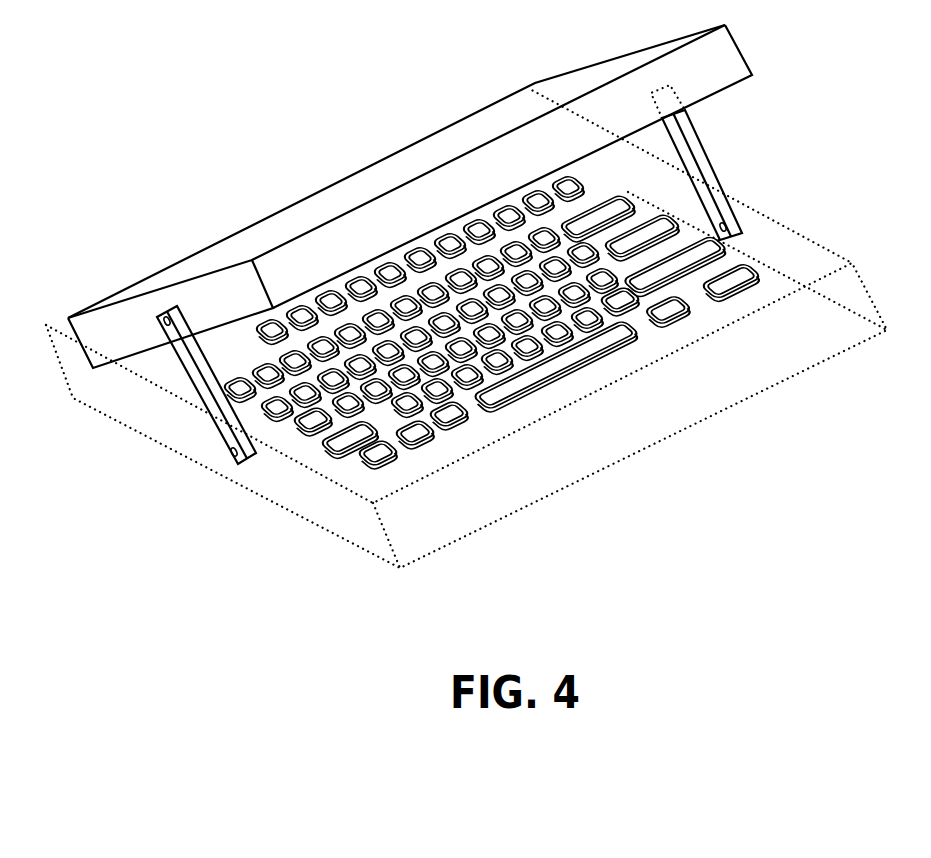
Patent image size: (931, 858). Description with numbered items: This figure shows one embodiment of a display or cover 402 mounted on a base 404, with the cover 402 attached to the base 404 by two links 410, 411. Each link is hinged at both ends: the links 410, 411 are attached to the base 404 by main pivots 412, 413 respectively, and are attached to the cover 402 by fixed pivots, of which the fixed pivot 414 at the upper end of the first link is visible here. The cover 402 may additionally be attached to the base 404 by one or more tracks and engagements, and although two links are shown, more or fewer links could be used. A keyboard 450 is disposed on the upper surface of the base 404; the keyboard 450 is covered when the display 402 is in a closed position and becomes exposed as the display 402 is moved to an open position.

The cover 402 is at (237, 255).
The base 404 is at (283, 497).
The link 410 is at (200, 388).
The link 411 is at (710, 162).
The main pivot 412 is at (232, 463).
The main pivot 413 is at (723, 223).
The fixed pivot 414 is at (167, 317).
The keyboard 450 is at (573, 356).